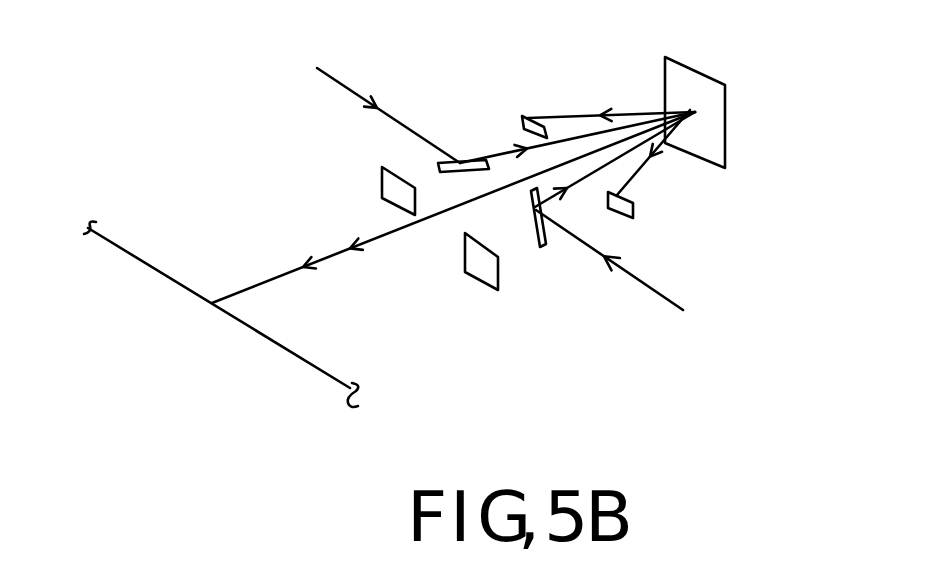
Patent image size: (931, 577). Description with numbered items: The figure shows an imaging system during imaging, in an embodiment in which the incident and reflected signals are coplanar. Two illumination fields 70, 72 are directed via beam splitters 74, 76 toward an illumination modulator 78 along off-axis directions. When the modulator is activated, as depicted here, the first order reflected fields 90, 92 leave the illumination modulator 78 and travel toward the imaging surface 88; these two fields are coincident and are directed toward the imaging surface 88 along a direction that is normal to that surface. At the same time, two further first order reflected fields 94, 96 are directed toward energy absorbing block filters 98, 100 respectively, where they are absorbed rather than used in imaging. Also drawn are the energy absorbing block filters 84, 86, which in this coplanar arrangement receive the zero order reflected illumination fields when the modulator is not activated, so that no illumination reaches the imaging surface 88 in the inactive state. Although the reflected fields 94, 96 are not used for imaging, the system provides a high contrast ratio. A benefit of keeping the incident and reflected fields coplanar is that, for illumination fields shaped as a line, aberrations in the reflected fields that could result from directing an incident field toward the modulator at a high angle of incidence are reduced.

The illumination field 70 is at (399, 118).
The illumination field 72 is at (660, 290).
The beam splitter 74 is at (461, 162).
The beam splitter 76 is at (543, 244).
The illumination modulator 78 is at (710, 73).
The energy absorbing block filter 84 is at (480, 290).
The energy absorbing block filter 86 is at (380, 194).
The imaging surface 88 is at (260, 340).
The first order reflected field 90 is at (269, 281).
The first order reflected field 92 is at (377, 240).
The first order reflected field 94 is at (629, 110).
The first order reflected field 96 is at (662, 148).
The energy absorbing block filter 98 is at (525, 116).
The energy absorbing block filter 100 is at (633, 212).